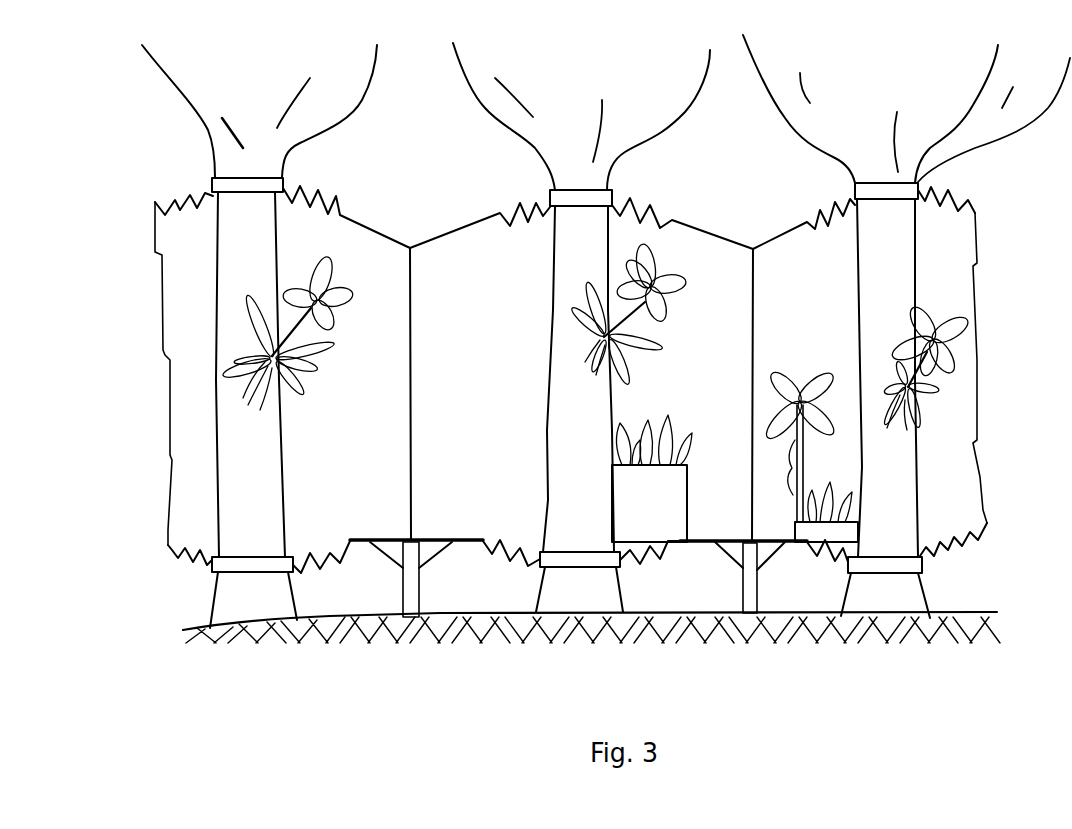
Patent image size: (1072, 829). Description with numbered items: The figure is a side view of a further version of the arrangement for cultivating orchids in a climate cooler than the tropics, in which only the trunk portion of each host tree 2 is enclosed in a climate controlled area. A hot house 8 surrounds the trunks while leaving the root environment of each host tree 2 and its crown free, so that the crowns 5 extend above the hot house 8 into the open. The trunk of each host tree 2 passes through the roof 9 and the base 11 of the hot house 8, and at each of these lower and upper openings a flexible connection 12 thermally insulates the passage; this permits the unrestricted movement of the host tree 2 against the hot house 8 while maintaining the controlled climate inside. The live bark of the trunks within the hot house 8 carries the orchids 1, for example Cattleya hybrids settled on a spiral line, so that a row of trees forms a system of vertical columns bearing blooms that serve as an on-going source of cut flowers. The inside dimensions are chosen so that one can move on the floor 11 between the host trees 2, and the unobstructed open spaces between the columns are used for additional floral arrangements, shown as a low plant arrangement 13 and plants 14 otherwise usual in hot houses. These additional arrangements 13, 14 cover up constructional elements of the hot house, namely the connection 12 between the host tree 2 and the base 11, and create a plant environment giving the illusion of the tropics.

The orchids 1 is at (293, 337).
The host tree 2 is at (270, 478).
The crowns 5 is at (335, 78).
The hot house 8 is at (369, 210).
The roof 9 is at (397, 240).
The base 11 is at (368, 540).
The flexible connection 12 is at (307, 191).
The planter box 13 is at (674, 412).
The plants 14 is at (798, 372).